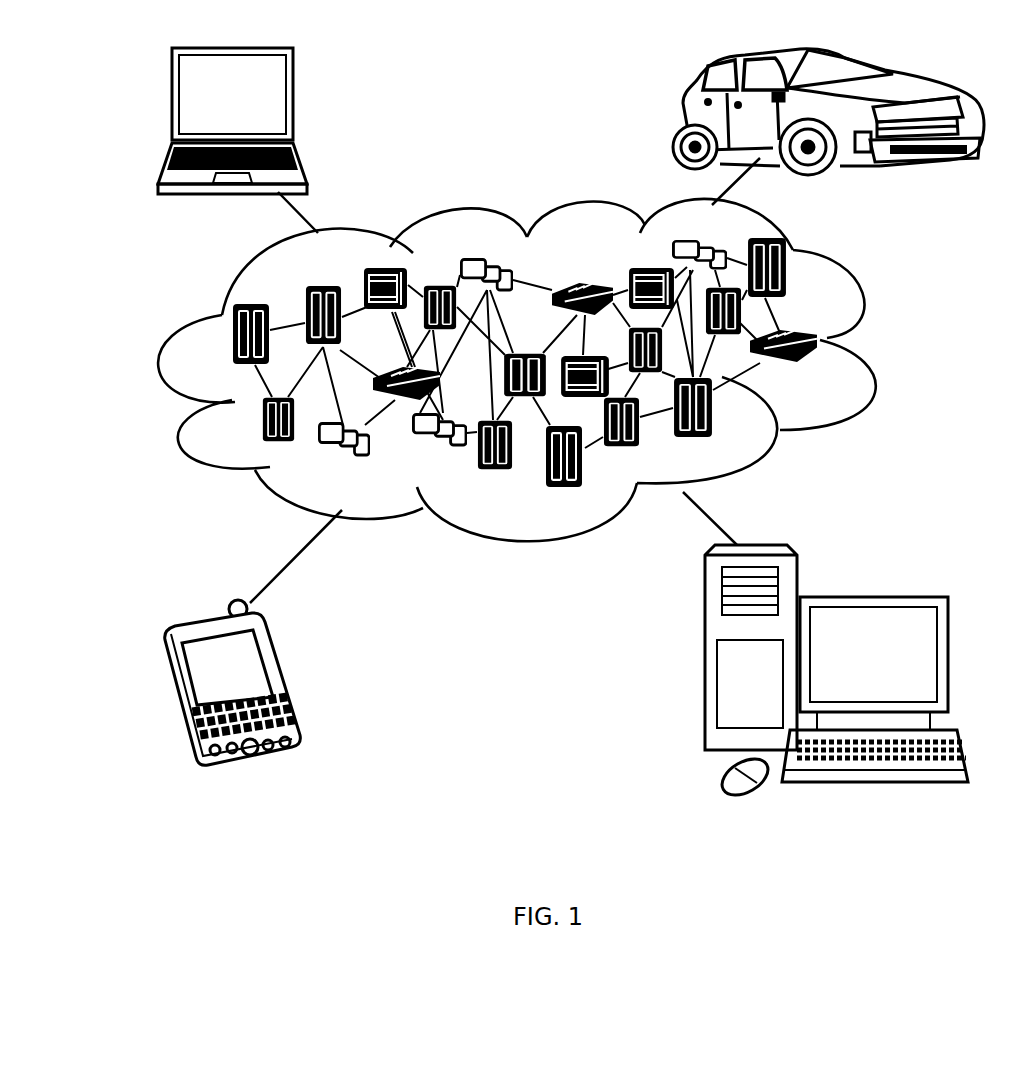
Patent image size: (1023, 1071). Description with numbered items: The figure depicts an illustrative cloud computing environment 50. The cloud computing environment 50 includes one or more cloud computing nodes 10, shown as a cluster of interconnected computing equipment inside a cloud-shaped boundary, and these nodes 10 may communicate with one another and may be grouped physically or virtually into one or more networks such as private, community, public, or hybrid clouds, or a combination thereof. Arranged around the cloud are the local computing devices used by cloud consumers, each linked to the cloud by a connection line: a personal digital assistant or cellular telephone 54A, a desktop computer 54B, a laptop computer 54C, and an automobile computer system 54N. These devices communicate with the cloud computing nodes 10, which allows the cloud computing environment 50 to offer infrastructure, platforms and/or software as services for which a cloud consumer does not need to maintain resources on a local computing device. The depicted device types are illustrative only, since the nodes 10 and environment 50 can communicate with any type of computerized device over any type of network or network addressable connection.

The cloud computing node 10 is at (832, 375).
The cloud computing environment 50 is at (873, 350).
The personal digital assistant (PDA) or cellular telephone 54A is at (285, 680).
The desktop computer 54B is at (872, 597).
The laptop computer 54C is at (293, 103).
The automobile computer system 54N is at (680, 117).